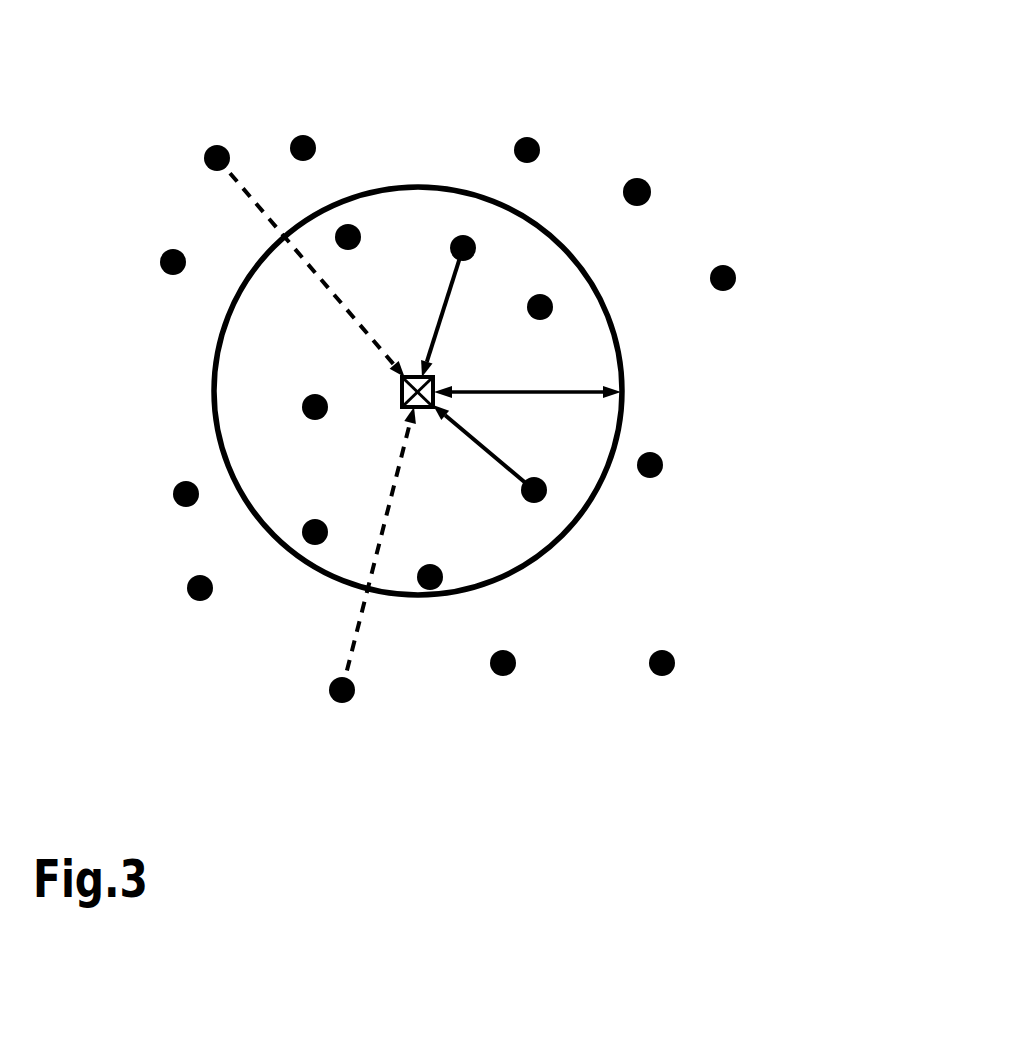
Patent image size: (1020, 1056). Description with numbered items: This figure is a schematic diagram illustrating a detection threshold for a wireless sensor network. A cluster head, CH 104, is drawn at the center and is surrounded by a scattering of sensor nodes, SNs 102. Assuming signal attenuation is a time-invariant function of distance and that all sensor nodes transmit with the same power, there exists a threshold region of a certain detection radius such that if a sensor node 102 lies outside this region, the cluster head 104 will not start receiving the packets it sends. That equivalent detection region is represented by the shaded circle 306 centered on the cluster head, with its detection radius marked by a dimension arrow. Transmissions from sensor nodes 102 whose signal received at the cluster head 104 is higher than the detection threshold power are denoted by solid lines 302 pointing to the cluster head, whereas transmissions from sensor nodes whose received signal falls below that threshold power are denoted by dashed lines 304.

The sensor node (SN) 102 is at (637, 192).
The cluster head (CH) 104 is at (406, 362).
The solid line 302 is at (440, 318).
The dashed line 304 is at (267, 210).
The shaded circle 306 is at (622, 360).